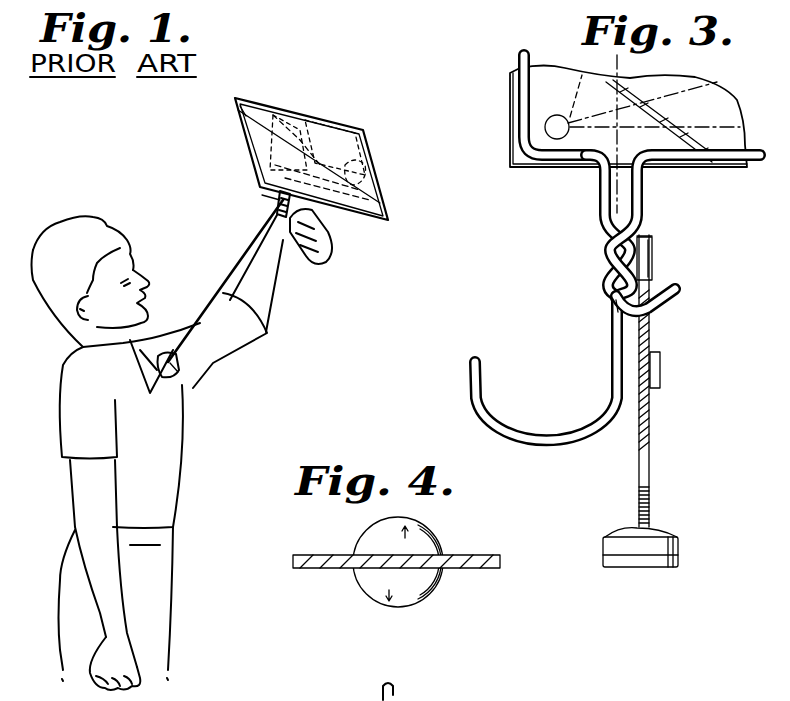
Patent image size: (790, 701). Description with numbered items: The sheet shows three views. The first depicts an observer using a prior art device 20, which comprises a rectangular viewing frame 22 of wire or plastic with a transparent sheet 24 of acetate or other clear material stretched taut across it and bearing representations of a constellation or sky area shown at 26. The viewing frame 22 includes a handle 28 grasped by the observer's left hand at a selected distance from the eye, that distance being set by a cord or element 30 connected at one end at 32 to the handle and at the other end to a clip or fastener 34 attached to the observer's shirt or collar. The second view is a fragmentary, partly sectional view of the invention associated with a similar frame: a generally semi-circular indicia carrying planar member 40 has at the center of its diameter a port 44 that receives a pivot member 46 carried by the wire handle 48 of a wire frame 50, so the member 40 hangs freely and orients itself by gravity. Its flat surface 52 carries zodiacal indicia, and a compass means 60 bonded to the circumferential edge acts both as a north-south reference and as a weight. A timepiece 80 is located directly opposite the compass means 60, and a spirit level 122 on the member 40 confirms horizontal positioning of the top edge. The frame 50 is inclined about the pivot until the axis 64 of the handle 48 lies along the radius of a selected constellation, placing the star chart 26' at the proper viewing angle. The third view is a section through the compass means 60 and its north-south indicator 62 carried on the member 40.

In FIG. 1, the prior art device 20 is at (296, 98).
In FIG. 1, the rectangular viewing frame 22 is at (365, 132).
In FIG. 1, the transparent sheet 24 is at (360, 173).
In FIG. 1, the representations of a constellation or sky area 26 is at (235, 138).
In FIG. 3, the star chart 26' is at (639, 105).
In FIG. 1, the handle 28 is at (262, 195).
In FIG. 1, the cord or element 30 is at (258, 327).
In FIG. 1, the connection of cord to handle 32 is at (277, 203).
In FIG. 1, the clip or fastener 34 is at (178, 380).
In FIG. 3, the indicia carrying planar member 40 is at (652, 428).
In FIG. 4, the indicia carrying planar member 40 is at (323, 568).
In FIG. 3, the port 44 is at (630, 327).
In FIG. 3, the pivot member 46 is at (667, 293).
In FIG. 3, the wire handle 48 is at (550, 440).
In FIG. 3, the wire frame 50 is at (518, 62).
In FIG. 4, the wire frame 50 is at (403, 690).
In FIG. 3, the flat surface 52 is at (650, 500).
In FIG. 3, the compass means 60 is at (647, 563).
In FIG. 4, the compass means 60 is at (430, 595).
In FIG. 4, the north-south indicator 62 is at (413, 547).
In FIG. 3, the axis of the handle 64 is at (613, 182).
In FIG. 3, the timepiece 80 is at (647, 233).
In FIG. 3, the spirit level 122 is at (660, 373).